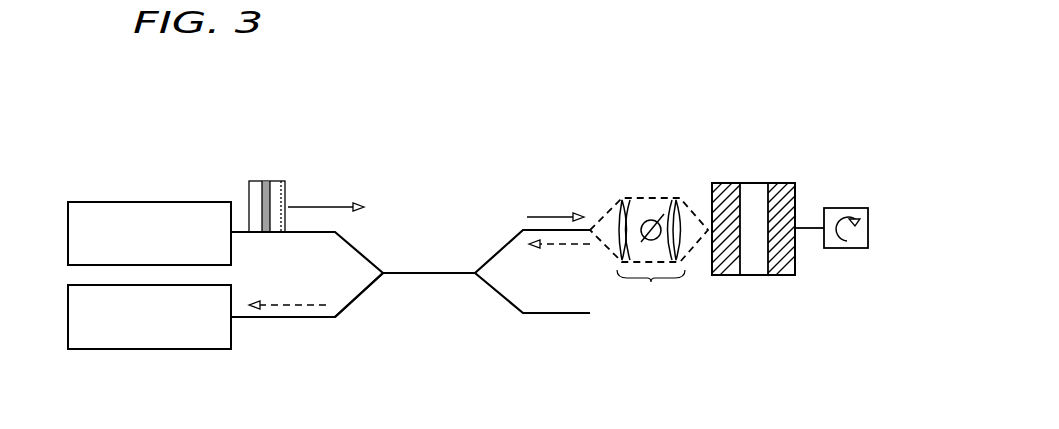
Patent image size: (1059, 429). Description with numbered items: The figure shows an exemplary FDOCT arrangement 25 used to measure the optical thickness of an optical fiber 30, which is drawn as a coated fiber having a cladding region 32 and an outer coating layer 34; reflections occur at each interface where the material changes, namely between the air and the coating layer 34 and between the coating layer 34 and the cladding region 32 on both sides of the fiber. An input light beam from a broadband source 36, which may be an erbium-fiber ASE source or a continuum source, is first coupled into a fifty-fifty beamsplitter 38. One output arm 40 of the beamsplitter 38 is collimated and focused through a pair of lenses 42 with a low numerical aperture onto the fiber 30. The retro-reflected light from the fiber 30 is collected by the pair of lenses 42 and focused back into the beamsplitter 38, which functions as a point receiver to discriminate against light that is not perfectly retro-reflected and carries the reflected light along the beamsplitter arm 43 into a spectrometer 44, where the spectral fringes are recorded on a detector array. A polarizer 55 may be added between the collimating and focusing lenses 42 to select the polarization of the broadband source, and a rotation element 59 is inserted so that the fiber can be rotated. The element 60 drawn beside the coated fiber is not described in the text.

The FDOCT arrangement 25 is at (250, 104).
The optical fiber 30 is at (793, 181).
The cladding region 32 is at (753, 192).
The coating layer 34 is at (722, 183).
The broadband source 36 is at (128, 202).
The 50:50 beamsplitter 38 is at (432, 264).
The output arm 40 is at (560, 232).
The pair of lenses 42 is at (649, 254).
The beamsplitter arm 43 is at (350, 302).
The spectrometer 44 is at (168, 349).
The polarizer 55 is at (278, 181).
The rotation element 59 is at (648, 218).
The rotation stage 60 is at (847, 208).